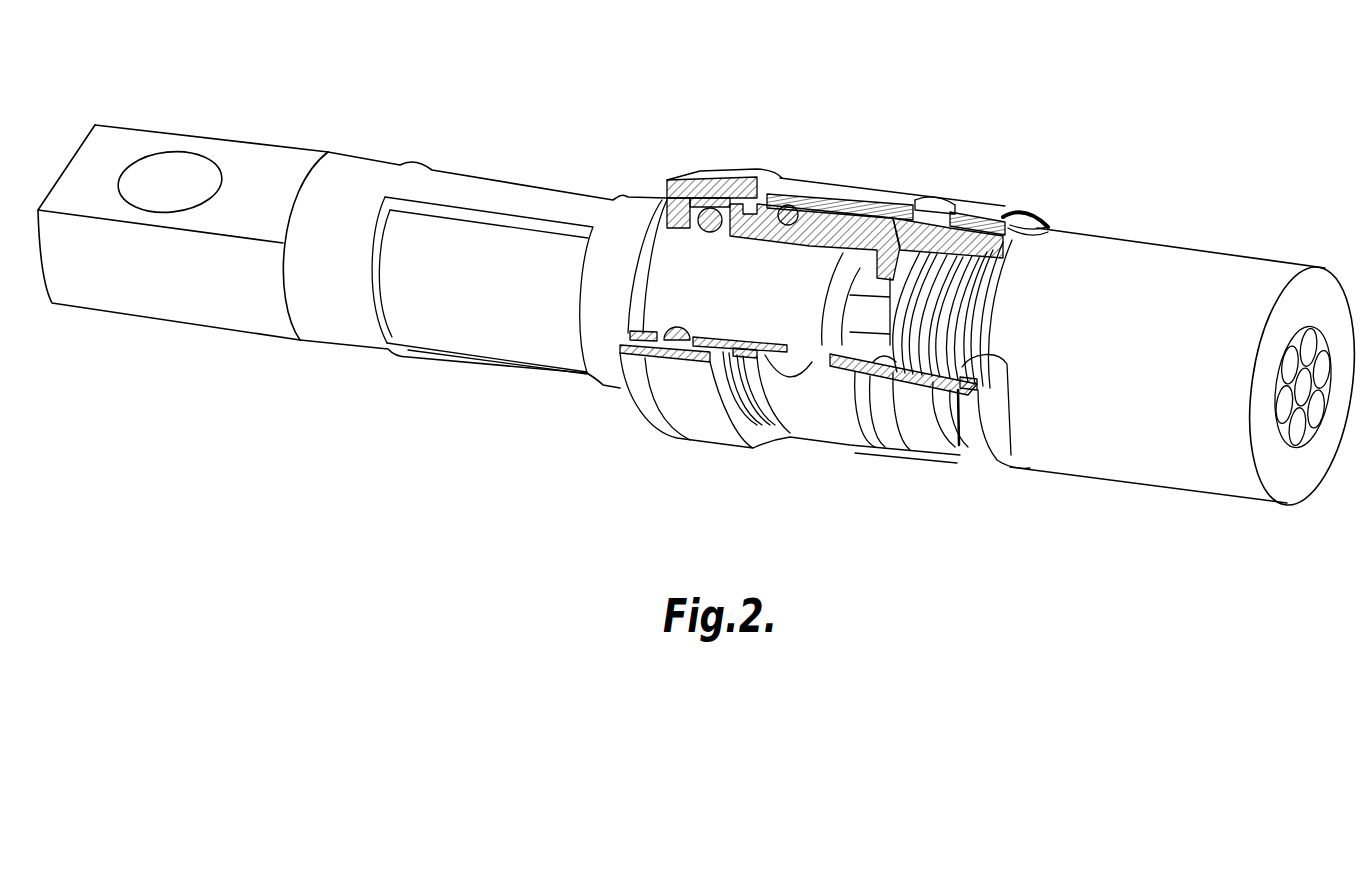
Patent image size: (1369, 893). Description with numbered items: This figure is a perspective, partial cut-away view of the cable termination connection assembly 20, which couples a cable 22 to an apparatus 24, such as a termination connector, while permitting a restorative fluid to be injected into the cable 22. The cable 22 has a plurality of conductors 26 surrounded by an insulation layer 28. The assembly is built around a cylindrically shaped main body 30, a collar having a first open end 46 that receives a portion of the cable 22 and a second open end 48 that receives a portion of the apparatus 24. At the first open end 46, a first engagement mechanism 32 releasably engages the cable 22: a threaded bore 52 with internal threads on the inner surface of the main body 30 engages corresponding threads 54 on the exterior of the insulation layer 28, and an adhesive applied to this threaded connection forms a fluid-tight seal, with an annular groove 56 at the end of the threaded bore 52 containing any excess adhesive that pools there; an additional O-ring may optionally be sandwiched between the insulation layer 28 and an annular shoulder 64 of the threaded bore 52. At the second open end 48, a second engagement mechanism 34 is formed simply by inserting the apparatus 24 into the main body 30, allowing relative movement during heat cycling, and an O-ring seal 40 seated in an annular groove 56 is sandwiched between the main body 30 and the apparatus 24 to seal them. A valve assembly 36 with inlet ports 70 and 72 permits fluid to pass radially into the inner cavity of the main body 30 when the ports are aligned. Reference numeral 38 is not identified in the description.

The cable termination connection assembly 20 is at (908, 78).
The cable 22 is at (1173, 231).
The apparatus 24 is at (369, 131).
The conductors 26 is at (893, 222).
The insulation layer 28 is at (1212, 272).
The main body 30 is at (773, 192).
The first engagement mechanism 32 is at (1012, 268).
The second engagement mechanism 34 is at (665, 198).
The valve assembly 36 is at (989, 203).
The seal ring 38 is at (700, 197).
The seal 40 is at (732, 193).
The first open end 46 is at (1047, 226).
The second open end 48 is at (672, 182).
The threaded bore 52 is at (997, 460).
The threads 54 is at (955, 433).
The annular groove 56 is at (897, 441).
The annular shoulder 64 is at (962, 215).
The inlet port 70 is at (937, 200).
The inlet port 72 is at (790, 425).